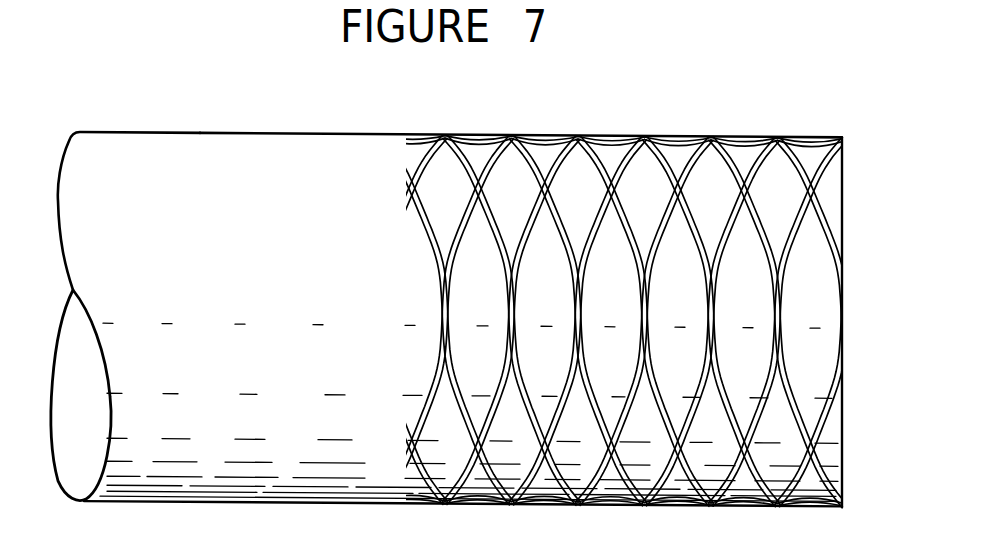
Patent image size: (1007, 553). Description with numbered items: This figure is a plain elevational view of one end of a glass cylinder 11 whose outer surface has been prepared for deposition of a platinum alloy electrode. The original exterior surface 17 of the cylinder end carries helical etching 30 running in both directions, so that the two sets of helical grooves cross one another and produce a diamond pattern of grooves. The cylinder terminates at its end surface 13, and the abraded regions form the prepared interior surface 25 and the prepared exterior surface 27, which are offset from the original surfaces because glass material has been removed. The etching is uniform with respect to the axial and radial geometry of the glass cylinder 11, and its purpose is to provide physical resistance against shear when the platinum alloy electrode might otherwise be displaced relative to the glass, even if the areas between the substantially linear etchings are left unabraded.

The glass cylinder 11 is at (205, 122).
The end surface 13 is at (848, 250).
The exterior surface 17 is at (299, 145).
The prepared interior surface 25 is at (611, 152).
The prepared exterior surface 27 is at (705, 112).
The helical etching 30 is at (420, 165).